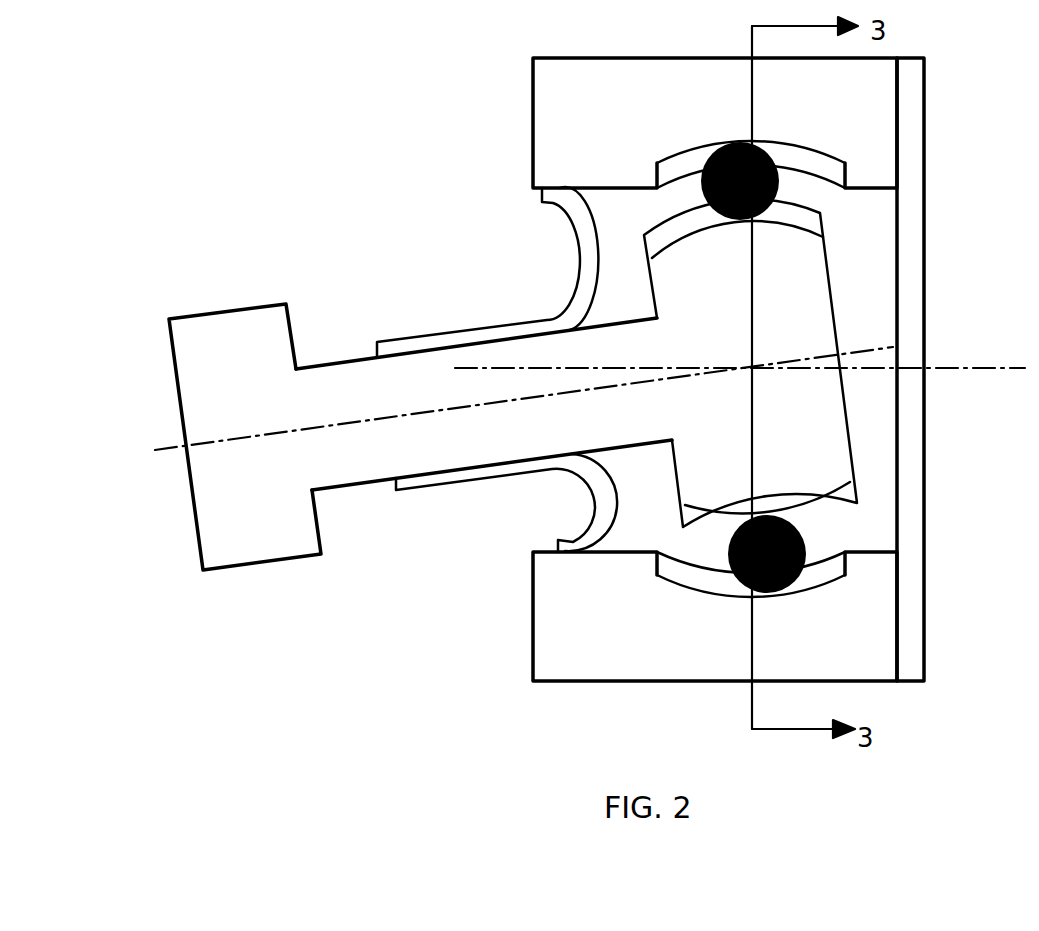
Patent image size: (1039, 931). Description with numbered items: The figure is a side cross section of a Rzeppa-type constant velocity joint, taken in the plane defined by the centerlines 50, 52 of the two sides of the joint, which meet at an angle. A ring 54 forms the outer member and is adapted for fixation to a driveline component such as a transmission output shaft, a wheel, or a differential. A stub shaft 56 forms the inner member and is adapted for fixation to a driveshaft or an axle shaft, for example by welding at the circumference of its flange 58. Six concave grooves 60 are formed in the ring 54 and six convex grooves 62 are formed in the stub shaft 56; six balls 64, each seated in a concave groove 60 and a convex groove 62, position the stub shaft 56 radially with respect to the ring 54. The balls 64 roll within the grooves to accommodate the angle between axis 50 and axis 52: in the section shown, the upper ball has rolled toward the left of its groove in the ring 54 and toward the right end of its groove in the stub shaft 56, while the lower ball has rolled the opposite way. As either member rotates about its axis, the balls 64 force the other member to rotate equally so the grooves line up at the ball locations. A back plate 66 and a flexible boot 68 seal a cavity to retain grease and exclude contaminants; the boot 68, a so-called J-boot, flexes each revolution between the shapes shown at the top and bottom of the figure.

The centerline 50 is at (963, 369).
The centerline 52 is at (263, 433).
The ring 54 is at (531, 122).
The stub shaft 56 is at (350, 488).
The flange 58 is at (222, 309).
The concave groove 60 is at (684, 166).
The convex groove 62 is at (827, 507).
The ball 64 is at (740, 222).
The back plate 66 is at (925, 245).
The flexible boot 68 is at (577, 283).